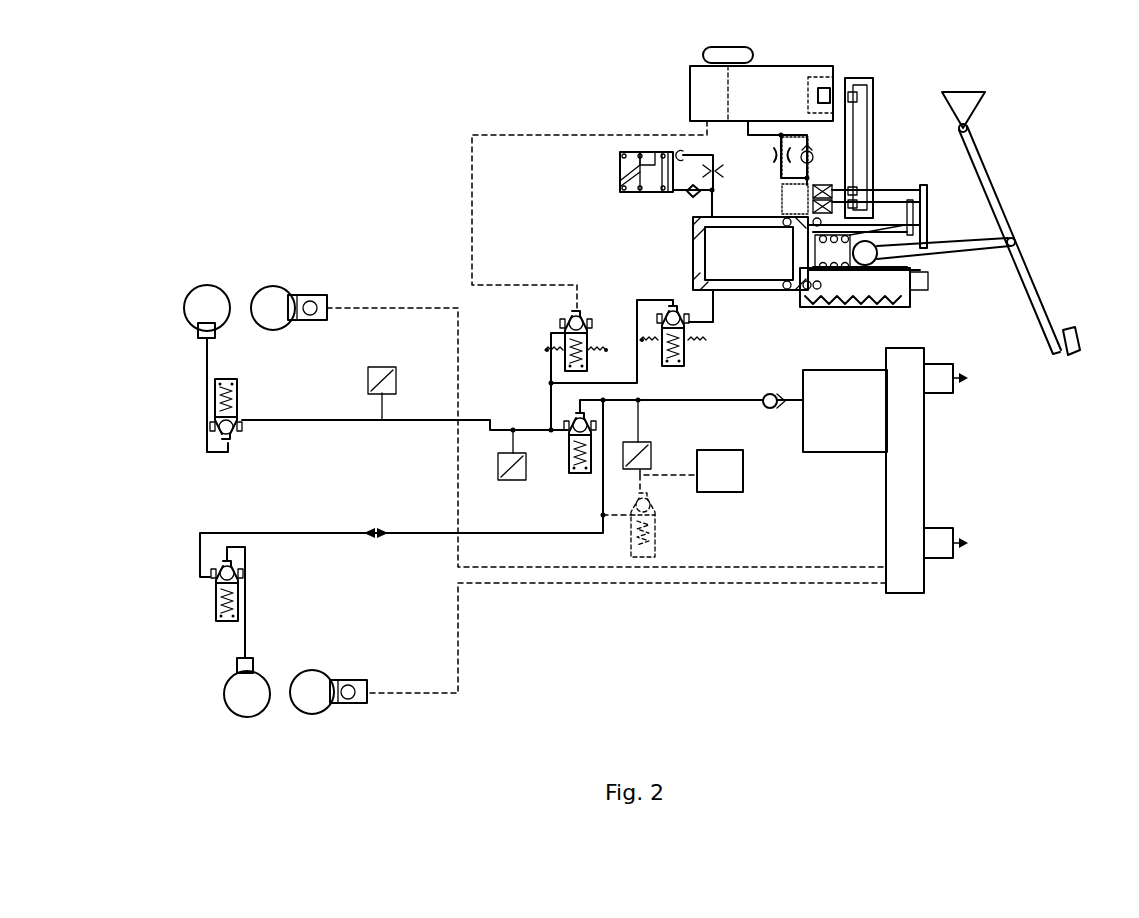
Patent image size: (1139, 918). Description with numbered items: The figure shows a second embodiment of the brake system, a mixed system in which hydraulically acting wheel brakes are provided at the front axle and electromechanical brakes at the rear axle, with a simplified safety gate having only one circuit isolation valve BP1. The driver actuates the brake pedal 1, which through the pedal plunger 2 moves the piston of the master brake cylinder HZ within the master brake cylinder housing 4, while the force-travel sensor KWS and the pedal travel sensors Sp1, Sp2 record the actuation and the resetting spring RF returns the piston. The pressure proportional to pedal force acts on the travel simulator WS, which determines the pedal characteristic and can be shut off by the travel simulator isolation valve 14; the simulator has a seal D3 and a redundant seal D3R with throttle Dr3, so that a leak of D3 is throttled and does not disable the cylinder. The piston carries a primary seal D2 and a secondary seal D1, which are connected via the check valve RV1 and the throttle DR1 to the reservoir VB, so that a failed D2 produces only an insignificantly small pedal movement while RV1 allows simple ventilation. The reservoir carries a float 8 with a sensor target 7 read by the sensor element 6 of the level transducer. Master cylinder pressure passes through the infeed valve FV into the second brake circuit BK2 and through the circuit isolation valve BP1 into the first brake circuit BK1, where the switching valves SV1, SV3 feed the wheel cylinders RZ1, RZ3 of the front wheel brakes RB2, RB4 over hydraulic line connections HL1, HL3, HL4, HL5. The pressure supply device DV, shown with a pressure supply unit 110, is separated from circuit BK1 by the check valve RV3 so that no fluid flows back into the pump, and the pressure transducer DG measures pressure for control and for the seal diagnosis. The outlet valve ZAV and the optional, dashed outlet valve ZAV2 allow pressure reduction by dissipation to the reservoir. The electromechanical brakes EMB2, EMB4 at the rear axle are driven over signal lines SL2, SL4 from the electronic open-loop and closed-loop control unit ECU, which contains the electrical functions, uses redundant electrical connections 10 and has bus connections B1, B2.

The brake pedal 1 is at (1090, 340).
The pedal plunger 2 is at (965, 258).
The master brake cylinder housing 4 is at (696, 270).
The sensor element for level transducer 6 is at (858, 97).
The sensor target 7 is at (832, 92).
The float in the reservoir 8 is at (810, 85).
The redundant electrical connection 10 is at (546, 350).
The travel simulator isolation valve 14 is at (700, 210).
The pressure supply unit 110 is at (759, 255).
The bus connection 1 B1 is at (964, 378).
The bus connection 2 B2 is at (964, 545).
The first brake circuit BK1 is at (405, 535).
The second brake circuit BK2 is at (300, 419).
The circuit isolation valve BP1 is at (585, 471).
The secondary seal D1 is at (784, 221).
The primary seal D2 is at (819, 300).
The travel simulator seal D3 is at (660, 152).
The redundant travel simulator seal D3R is at (650, 152).
The pressure transducer DG is at (382, 366).
The throttle DR1 is at (776, 163).
The throttle Dr3 is at (620, 162).
The pressure supply device DV is at (823, 453).
The electronic open-loop and closed-loop control unit ECU is at (905, 470).
The electromechanical brake EMB2 is at (348, 680).
The electromechanical brake EMB4 is at (318, 295).
The infeed valve FV is at (665, 366).
The hydraulic line connection HL1 is at (715, 399).
The hydraulic line connection HL3 is at (637, 350).
The hydraulic line connection HL4 is at (318, 535).
The hydraulic line connection HL5 is at (318, 421).
The master brake cylinder HZ is at (692, 236).
The force-travel sensor KWS is at (850, 235).
The wheel brake 2 RB2 is at (318, 712).
The wheel brake 4 RB4 is at (275, 290).
The resetting spring RF is at (850, 296).
The check valve RV1 is at (812, 150).
The check valve RV3 is at (770, 409).
The wheel cylinder RZ1 is at (240, 713).
The wheel cylinder RZ3 is at (206, 287).
The signal line 2 SL2 is at (592, 586).
The signal line 4 SL4 is at (695, 570).
The switching valve SV1 is at (214, 615).
The switching valve SV3 is at (212, 382).
The pedal travel sensor Sp1 is at (852, 192).
The pedal travel sensor Sp2 is at (852, 204).
The reservoir VB is at (822, 72).
The travel simulator WS is at (620, 186).
The central outlet valve ZAV is at (583, 316).
The additional central outlet valve ZAV2 is at (660, 536).